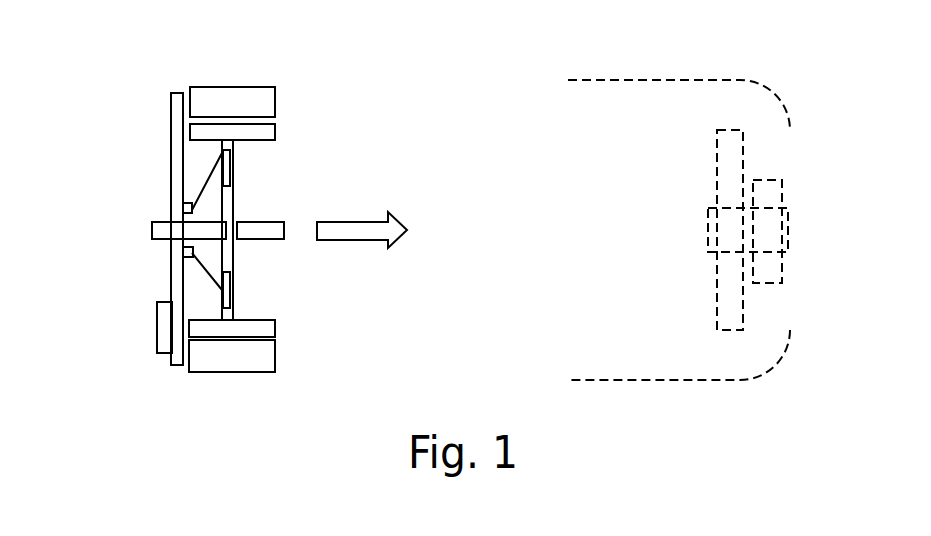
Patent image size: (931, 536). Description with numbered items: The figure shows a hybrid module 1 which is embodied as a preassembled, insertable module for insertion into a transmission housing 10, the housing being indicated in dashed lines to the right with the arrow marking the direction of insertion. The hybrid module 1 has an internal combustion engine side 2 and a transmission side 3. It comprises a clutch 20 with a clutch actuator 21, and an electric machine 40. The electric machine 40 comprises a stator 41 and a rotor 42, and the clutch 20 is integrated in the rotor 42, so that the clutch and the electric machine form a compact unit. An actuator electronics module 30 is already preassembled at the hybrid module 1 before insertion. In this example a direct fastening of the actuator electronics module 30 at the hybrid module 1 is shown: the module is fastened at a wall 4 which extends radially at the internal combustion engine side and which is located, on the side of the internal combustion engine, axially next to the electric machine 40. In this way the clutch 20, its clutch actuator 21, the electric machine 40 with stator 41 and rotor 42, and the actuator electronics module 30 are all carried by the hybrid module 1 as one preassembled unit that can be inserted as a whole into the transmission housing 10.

The hybrid module 1 is at (143, 113).
The internal combustion engine side 2 is at (118, 220).
The transmission side 3 is at (360, 340).
The wall 4 is at (172, 137).
The transmission housing 10 is at (754, 81).
The clutch 20 is at (250, 287).
The clutch actuator 21 is at (183, 252).
The actuator electronics module 30 is at (157, 322).
The electric machine 40 is at (382, 45).
The stator 41 is at (278, 95).
The rotor 42 is at (278, 135).